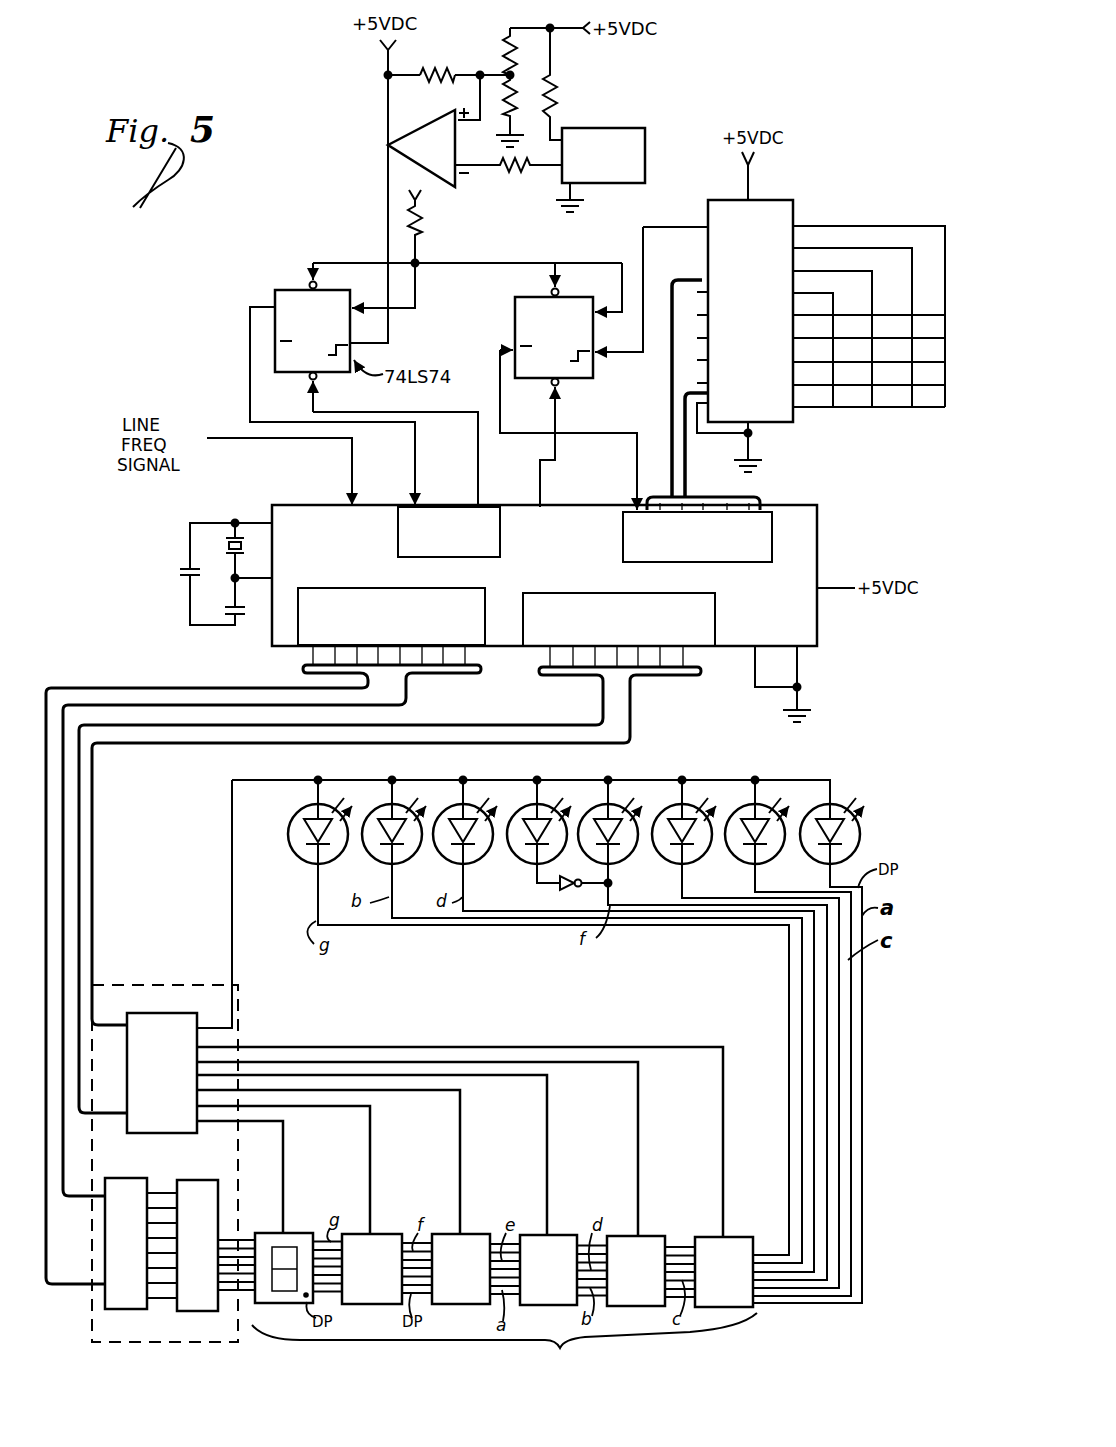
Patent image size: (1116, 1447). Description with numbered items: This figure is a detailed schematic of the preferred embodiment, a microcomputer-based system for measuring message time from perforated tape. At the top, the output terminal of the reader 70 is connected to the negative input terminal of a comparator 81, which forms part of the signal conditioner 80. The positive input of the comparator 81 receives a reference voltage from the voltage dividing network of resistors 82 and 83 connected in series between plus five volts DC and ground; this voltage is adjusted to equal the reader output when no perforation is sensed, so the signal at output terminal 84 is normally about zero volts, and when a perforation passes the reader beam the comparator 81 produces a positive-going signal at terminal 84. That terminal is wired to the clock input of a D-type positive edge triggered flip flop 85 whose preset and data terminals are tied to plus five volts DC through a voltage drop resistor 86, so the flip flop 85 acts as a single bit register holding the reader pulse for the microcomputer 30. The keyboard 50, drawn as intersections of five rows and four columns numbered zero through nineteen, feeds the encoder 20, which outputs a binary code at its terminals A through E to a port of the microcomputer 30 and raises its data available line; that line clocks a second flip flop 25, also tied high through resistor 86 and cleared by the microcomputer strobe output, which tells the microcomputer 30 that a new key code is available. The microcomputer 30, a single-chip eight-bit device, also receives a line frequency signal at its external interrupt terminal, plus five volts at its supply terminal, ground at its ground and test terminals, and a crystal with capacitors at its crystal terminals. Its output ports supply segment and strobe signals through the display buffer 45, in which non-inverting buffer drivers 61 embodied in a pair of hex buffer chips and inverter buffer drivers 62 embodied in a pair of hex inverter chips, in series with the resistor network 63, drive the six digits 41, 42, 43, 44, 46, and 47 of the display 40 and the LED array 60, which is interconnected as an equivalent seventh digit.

The encoder 20 is at (783, 200).
The second positive edge triggered flip flop 25 is at (540, 297).
The microcomputer 30 is at (820, 532).
The display 40 is at (504, 1349).
The digit 41 is at (300, 1233).
The digit 42 is at (392, 1234).
The digit 43 is at (476, 1234).
The digit 44 is at (562, 1235).
The digit 46 is at (652, 1236).
The digit 47 is at (735, 1240).
The display buffer 45 is at (238, 1036).
The keyboard 50 is at (951, 192).
The LED array 60 is at (880, 832).
The non-inverting buffer drivers 61 is at (160, 1013).
The inverter buffer drivers 62 is at (120, 1310).
The resistor network 63 is at (193, 1312).
The reader 70 is at (620, 128).
The signal conditioner 80 is at (452, 70).
The comparator 81 is at (440, 116).
The resistor 82 is at (524, 81).
The resistor 83 is at (548, 109).
The output terminal 84 is at (388, 146).
The D-type positive edge triggered flip flop 85 is at (290, 290).
The voltage drop resistor 86 is at (418, 224).